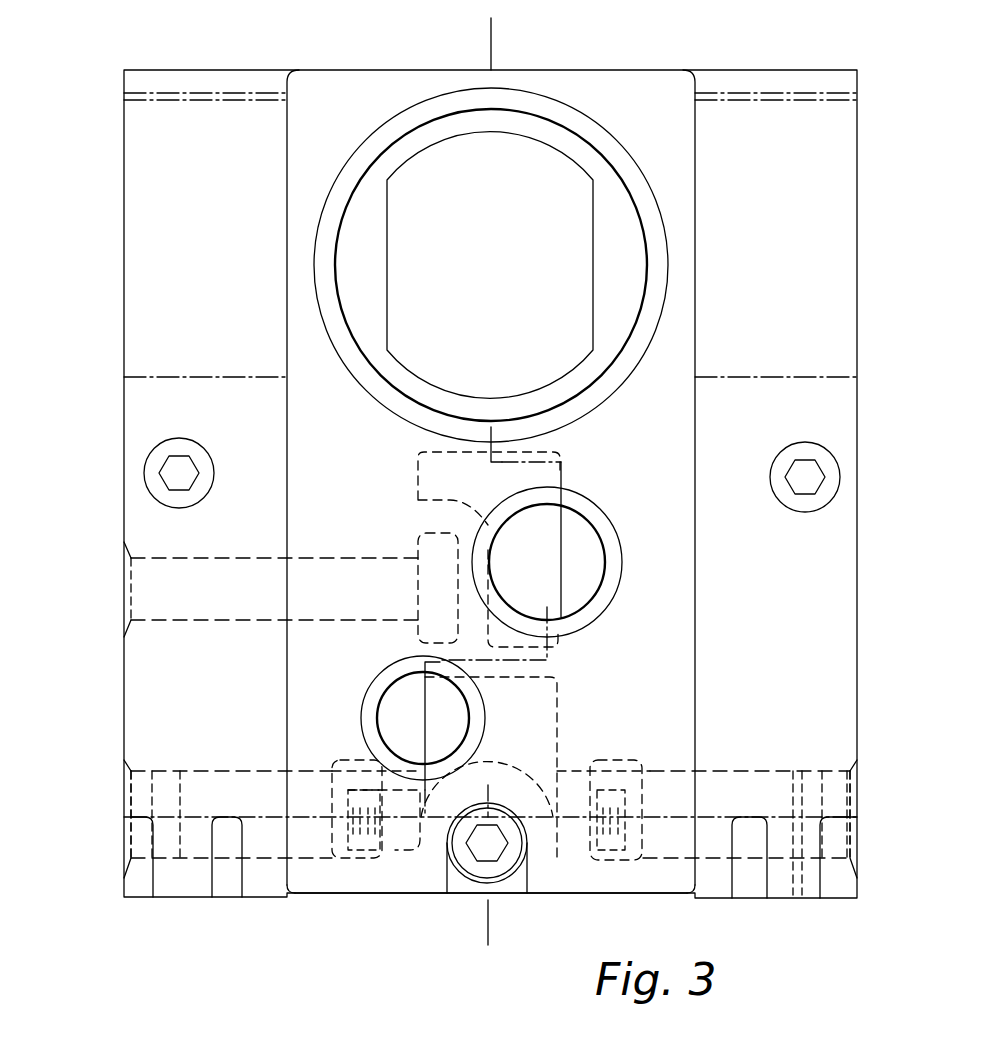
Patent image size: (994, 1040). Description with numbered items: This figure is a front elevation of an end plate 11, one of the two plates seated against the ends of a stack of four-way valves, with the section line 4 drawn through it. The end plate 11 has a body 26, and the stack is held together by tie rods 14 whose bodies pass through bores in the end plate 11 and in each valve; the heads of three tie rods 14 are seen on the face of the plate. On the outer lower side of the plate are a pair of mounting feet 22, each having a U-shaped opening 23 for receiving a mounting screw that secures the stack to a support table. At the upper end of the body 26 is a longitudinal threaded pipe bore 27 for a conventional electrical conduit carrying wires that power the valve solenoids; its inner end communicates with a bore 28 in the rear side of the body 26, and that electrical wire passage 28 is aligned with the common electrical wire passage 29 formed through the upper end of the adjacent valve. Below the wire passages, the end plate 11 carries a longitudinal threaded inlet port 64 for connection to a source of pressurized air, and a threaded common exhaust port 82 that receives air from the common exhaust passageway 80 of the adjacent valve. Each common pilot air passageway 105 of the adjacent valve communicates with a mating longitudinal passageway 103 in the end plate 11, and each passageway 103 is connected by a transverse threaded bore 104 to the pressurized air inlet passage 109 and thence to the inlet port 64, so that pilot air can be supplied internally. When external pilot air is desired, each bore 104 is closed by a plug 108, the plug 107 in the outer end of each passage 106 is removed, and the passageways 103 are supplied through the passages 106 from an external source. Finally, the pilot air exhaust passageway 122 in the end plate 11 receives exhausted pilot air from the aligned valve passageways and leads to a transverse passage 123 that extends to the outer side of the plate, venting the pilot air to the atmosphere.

The section line 4— 4 is at (527, 36).
The end plate 11 is at (306, 905).
The tie rod 14 is at (190, 455).
The mounting foot 22 is at (226, 880).
The U-shaped opening 23 is at (212, 875).
The end plate body 26 is at (630, 95).
The threaded pipe bore 27 is at (545, 124).
The electrical wire passage 28 is at (433, 160).
The common electrical wire passage 29 is at (473, 243).
The inlet port 64 is at (387, 704).
The common exhaust passageway 80 is at (570, 470).
The common exhaust port 82 is at (580, 517).
The longitudinal passageway 103 is at (338, 762).
The transverse threaded bore 104 is at (396, 840).
The common pilot air passageway 105 is at (362, 862).
The passage 106 is at (230, 770).
The plug 107 is at (142, 795).
The plug 108 is at (368, 788).
The pressurized air inlet passage 109 is at (557, 700).
The pilot air exhaust passageway 122 is at (415, 540).
The transverse passage 123 is at (250, 562).